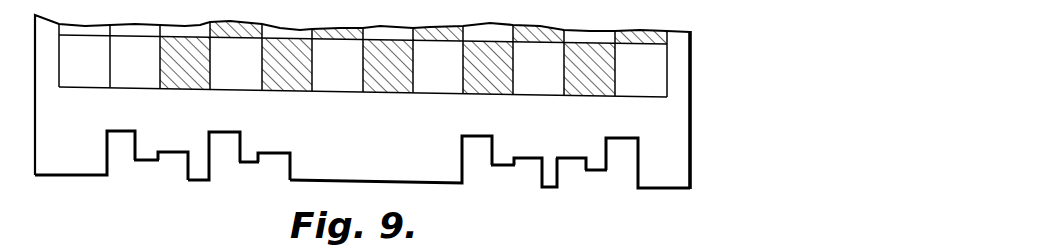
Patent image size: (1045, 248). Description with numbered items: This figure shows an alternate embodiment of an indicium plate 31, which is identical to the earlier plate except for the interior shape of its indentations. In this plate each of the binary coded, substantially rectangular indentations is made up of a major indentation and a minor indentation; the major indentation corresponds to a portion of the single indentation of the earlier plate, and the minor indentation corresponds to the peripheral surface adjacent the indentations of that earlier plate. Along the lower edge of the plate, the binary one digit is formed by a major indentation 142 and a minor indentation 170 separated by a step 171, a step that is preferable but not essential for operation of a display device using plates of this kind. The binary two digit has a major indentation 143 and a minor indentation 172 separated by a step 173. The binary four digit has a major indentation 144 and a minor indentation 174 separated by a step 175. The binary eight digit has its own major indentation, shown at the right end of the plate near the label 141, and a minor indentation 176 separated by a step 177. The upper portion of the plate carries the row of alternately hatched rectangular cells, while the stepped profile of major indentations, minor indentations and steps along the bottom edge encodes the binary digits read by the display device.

The indicium plate 31 is at (696, 158).
The end wall 141 is at (634, 181).
The "1" major indentation 142 is at (108, 165).
The "2" major indentation 143 is at (215, 166).
The "4" major indentation 144 is at (465, 176).
The "1" minor indentation 170 is at (172, 153).
The step 171 is at (147, 163).
The "2" minor indentation 172 is at (274, 155).
The step 173 is at (252, 168).
The "4" minor indentation 174 is at (526, 159).
The step 175 is at (501, 170).
The "8" minor indentation 176 is at (566, 159).
The step 177 is at (589, 170).